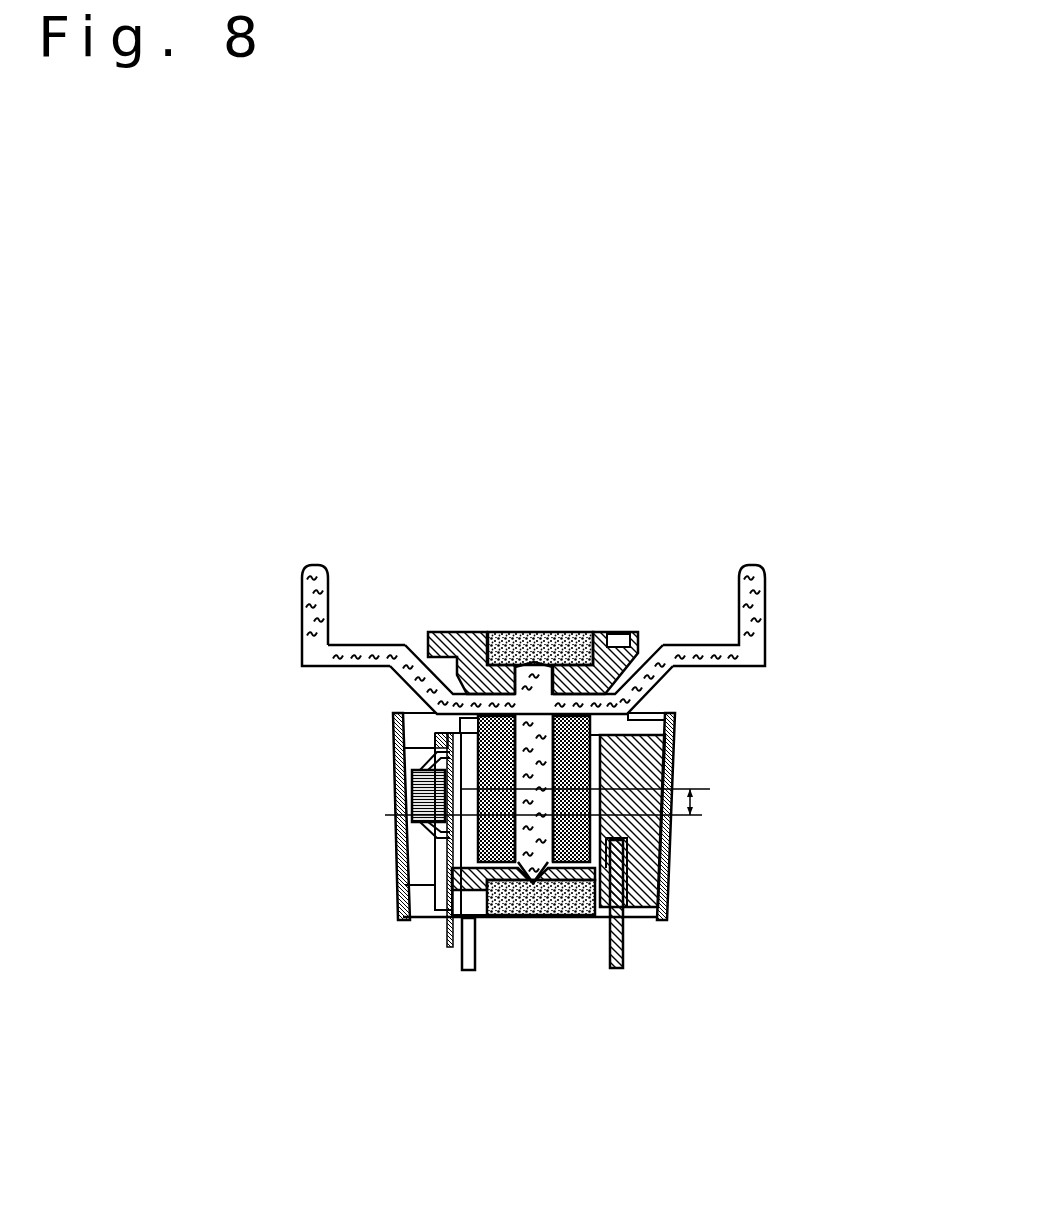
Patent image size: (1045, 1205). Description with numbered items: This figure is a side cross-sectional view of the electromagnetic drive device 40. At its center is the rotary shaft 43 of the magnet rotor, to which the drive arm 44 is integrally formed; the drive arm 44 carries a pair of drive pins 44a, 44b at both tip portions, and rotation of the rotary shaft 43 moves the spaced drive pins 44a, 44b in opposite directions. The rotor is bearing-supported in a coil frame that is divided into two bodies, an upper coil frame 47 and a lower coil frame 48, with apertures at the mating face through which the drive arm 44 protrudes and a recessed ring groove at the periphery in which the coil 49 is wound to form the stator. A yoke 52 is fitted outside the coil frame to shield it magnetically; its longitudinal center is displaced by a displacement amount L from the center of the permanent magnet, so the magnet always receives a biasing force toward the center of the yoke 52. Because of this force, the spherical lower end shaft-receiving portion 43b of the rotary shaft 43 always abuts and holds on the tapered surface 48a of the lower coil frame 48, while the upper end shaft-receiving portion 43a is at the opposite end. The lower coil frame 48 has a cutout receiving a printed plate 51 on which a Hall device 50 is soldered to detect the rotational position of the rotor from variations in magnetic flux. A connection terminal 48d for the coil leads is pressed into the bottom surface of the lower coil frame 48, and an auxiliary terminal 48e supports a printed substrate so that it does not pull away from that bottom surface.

The electromagnetic drive device 40 is at (812, 495).
The rotary shaft 43 is at (595, 750).
The upper end shaft-receiving portion 43a is at (565, 632).
The lower end shaft-receiving portion 43b is at (561, 915).
The drive arm 44 is at (694, 666).
The drive pin 44a is at (767, 582).
The drive pin 44b is at (306, 578).
The upper coil frame 47 is at (440, 632).
The lower coil frame 48 is at (666, 852).
The tapered surface 48a is at (518, 915).
The connection terminal 48d is at (462, 970).
The auxiliary terminal 48e is at (625, 948).
The coil 49 is at (535, 632).
The Hall device 50 is at (397, 783).
The printed plate 51 is at (445, 933).
The yoke 52 is at (395, 829).